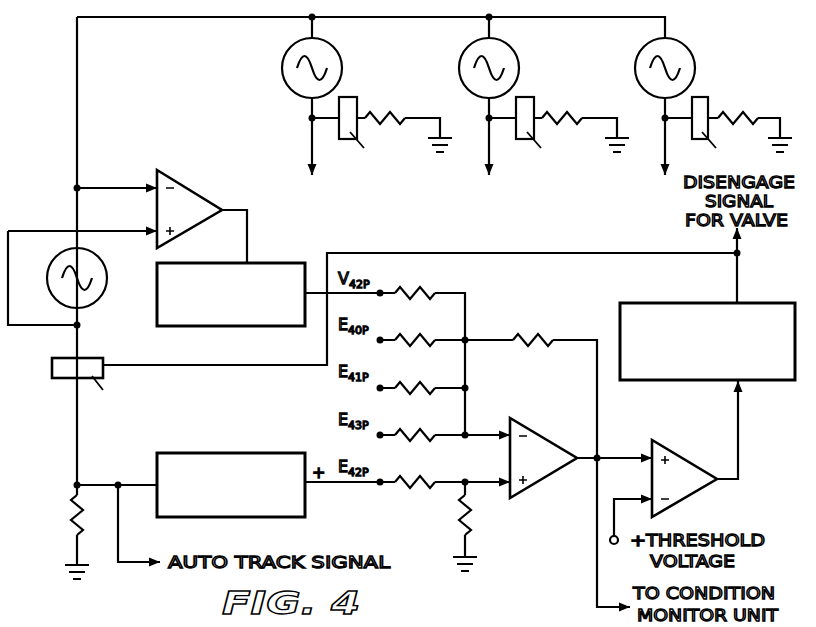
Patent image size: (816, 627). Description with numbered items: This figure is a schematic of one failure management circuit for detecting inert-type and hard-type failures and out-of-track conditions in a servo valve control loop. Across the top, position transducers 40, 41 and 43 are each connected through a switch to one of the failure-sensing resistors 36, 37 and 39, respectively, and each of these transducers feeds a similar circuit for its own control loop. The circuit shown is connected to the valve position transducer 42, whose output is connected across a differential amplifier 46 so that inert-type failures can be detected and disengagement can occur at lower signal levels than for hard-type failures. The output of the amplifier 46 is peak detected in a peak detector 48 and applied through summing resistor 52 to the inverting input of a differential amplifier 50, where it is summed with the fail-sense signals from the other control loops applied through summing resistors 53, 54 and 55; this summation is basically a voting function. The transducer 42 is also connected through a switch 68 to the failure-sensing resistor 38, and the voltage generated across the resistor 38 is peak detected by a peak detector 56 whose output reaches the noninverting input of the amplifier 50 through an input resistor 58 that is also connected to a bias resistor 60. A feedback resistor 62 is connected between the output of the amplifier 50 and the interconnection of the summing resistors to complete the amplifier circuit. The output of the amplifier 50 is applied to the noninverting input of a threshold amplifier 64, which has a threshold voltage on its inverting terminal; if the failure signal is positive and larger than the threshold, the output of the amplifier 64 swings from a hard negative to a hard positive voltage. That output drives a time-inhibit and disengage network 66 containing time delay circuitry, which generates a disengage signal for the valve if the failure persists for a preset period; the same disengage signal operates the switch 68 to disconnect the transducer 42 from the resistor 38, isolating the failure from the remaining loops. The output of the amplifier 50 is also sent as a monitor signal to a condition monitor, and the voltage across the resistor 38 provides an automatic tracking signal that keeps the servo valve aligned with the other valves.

The resistor 36 is at (375, 113).
The resistor 37 is at (552, 113).
The resistor 38 is at (70, 521).
The resistor 39 is at (720, 113).
The position transducer 40 is at (327, 57).
The position transducer 41 is at (504, 57).
The valve position transducer 42 is at (95, 270).
The position transducer 43 is at (683, 55).
The differential amplifier 46 is at (195, 199).
The peak detector 48 is at (268, 270).
The differential amplifier 50 is at (535, 446).
The summing resistor 52 is at (412, 290).
The summing resistor 53 is at (412, 337).
The summing resistor 54 is at (412, 385).
The summing resistor 55 is at (412, 432).
The peak detector 56 is at (225, 455).
The input resistor 58 is at (412, 479).
The bias resistor 60 is at (458, 524).
The feedback resistor 62 is at (527, 336).
The threshold amplifier 64 is at (680, 467).
The time-inhibit and disengage network 66 is at (690, 312).
The switch 68 is at (100, 364).